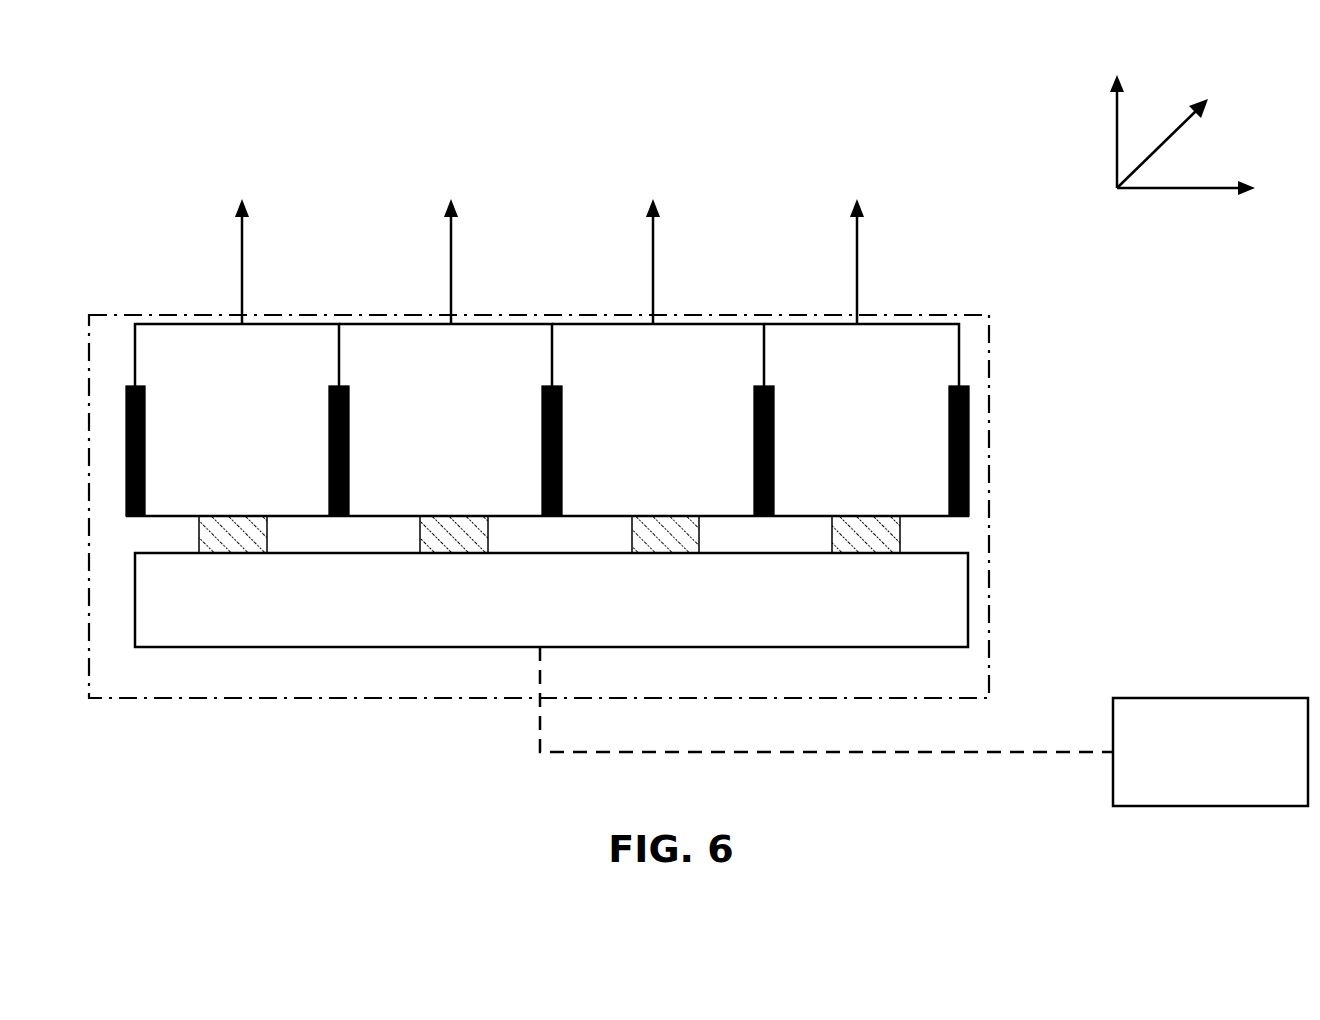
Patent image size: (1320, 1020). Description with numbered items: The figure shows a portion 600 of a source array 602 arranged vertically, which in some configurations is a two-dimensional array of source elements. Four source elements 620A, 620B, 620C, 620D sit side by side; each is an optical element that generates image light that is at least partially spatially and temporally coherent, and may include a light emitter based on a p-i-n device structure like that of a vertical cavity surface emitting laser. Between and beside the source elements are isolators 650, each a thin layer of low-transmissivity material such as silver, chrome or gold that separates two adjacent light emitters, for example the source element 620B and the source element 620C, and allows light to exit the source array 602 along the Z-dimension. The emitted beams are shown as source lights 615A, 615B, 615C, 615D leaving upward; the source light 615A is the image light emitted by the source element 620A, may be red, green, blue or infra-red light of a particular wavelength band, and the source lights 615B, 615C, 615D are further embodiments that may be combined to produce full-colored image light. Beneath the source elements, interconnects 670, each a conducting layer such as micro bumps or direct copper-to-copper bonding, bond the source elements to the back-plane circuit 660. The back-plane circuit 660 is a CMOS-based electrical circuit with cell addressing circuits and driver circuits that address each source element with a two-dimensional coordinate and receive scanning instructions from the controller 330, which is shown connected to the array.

The portion of a source array 600 is at (701, 406).
The source array 602 is at (989, 380).
The source light 615A is at (857, 300).
The source light 615B is at (653, 300).
The source light 615C is at (451, 305).
The source light 615D is at (242, 300).
The source element 620A is at (866, 420).
The source element 620B is at (658, 420).
The source element 620C is at (445, 420).
The source element 620D is at (232, 420).
The isolator 650 is at (330, 463).
The back-plane circuit 660 is at (968, 592).
The interconnect 670 is at (900, 536).
The controller 330 is at (924, 726).